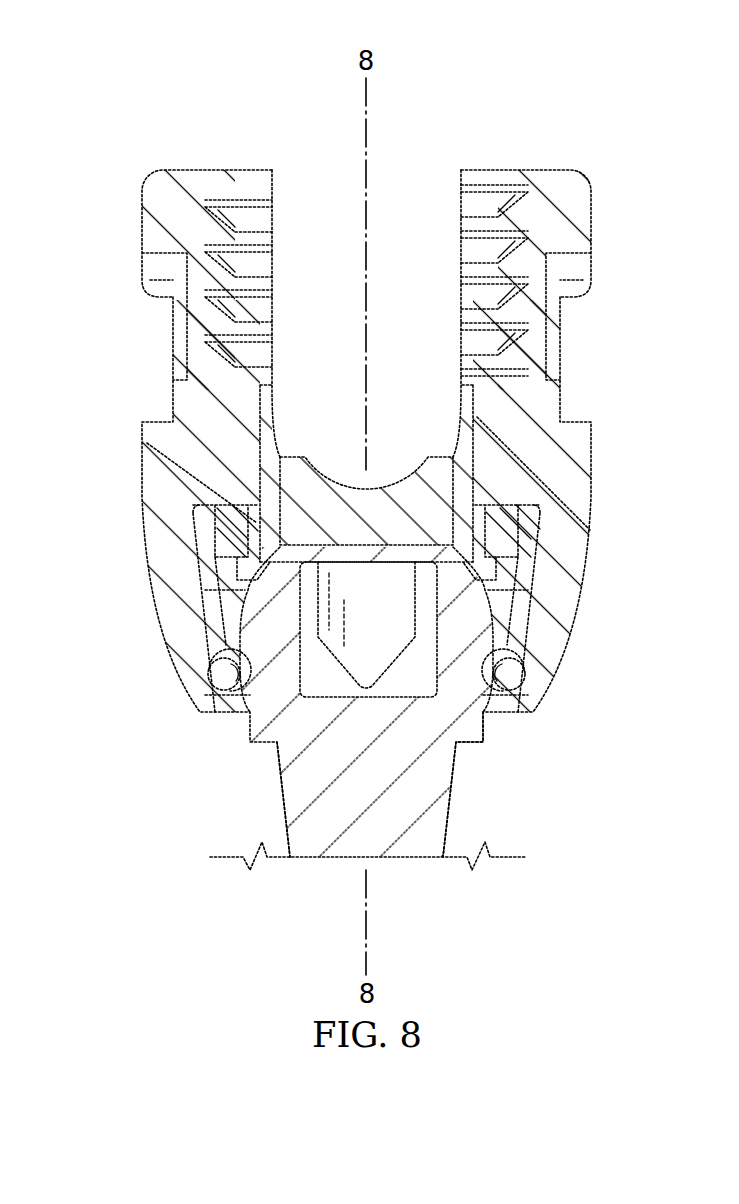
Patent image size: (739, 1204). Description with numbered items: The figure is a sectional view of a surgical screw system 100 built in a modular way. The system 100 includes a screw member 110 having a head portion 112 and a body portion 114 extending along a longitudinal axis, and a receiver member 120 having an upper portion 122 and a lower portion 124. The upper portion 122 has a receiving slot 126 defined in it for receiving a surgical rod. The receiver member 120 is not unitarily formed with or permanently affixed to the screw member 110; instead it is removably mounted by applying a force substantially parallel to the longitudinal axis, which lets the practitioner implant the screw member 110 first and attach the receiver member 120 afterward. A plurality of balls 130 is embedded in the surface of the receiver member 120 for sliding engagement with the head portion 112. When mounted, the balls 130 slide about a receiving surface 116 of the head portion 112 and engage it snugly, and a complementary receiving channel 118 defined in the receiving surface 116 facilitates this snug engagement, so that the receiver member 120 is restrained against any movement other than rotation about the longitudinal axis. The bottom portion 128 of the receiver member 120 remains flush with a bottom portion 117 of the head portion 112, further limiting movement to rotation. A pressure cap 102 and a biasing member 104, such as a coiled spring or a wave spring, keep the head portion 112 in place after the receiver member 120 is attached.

The surgical screw system 100 is at (536, 82).
The pressure cap 102 is at (445, 488).
The biasing member 104 is at (203, 533).
The screw member 110 is at (463, 767).
The head portion 112 is at (247, 612).
The body portion 114 is at (287, 802).
The receiving surface 116 is at (510, 722).
The bottom portion of the head portion 117 is at (258, 730).
The complementary receiving channel 118 is at (545, 636).
The receiver member 120 is at (597, 209).
The upper portion 122 is at (140, 221).
The lower portion 124 is at (140, 473).
The receiving slot 126 is at (312, 165).
The bottom portion of the receiving member 128 is at (210, 722).
The balls 130 is at (190, 700).